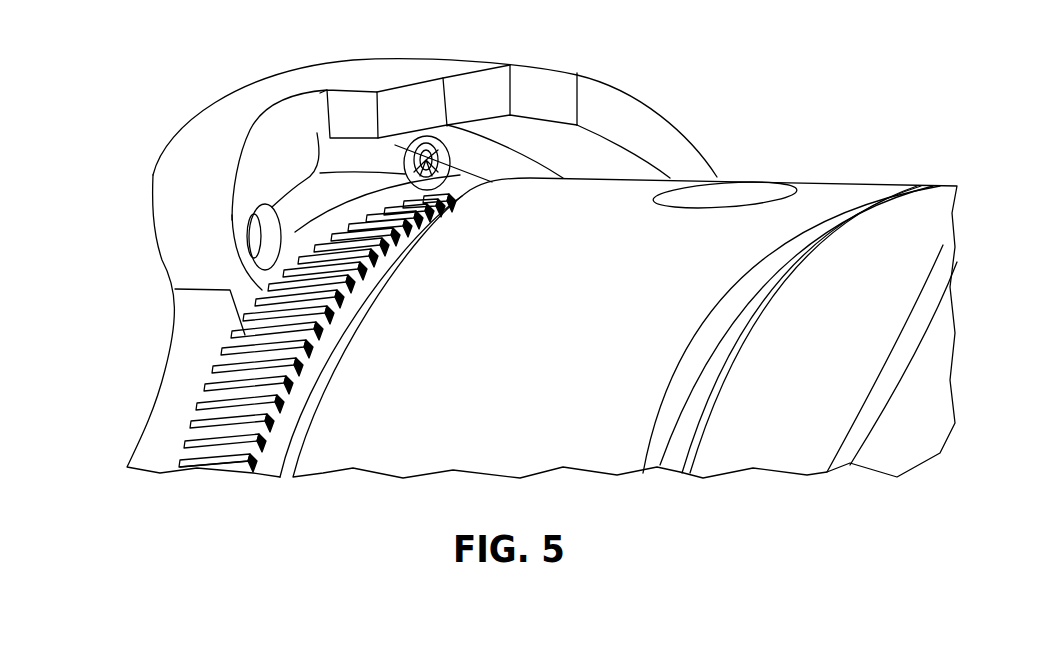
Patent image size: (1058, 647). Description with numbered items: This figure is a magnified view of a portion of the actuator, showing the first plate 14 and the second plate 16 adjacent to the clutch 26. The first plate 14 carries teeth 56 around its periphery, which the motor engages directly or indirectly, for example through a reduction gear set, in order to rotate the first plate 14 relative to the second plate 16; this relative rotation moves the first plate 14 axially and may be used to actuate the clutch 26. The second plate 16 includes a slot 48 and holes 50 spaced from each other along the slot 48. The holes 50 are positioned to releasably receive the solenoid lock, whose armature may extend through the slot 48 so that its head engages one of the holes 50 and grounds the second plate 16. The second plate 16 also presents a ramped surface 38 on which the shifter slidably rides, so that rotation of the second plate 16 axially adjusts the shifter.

The first plate 14 is at (240, 433).
The second plate 16 is at (165, 418).
The clutch 26 is at (813, 193).
The ramped surface 38 is at (552, 98).
The slot 48 is at (317, 133).
The holes 50 is at (253, 207).
The teeth 56 is at (200, 466).